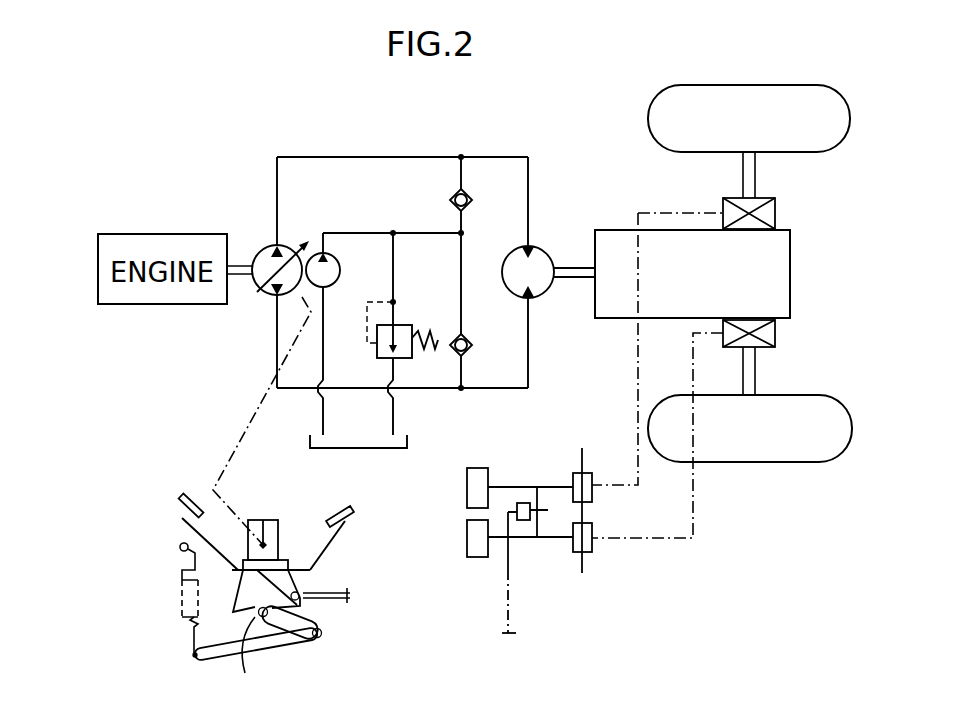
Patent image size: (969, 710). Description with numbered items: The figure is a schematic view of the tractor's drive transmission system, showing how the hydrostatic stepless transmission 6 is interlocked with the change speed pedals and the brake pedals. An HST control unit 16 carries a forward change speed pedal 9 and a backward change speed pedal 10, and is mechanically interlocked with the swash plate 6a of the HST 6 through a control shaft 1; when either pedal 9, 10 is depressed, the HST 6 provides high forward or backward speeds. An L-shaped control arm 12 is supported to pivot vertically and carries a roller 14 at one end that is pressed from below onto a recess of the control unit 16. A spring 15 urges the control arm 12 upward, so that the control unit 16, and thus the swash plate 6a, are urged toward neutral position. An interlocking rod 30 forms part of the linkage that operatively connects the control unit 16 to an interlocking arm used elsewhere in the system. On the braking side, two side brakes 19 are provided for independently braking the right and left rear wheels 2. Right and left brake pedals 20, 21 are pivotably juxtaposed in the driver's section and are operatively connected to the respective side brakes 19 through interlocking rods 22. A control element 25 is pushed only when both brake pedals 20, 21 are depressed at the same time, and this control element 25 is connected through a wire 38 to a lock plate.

The control shaft 1 is at (232, 455).
The rear wheels 2 is at (650, 105).
The hydrostatic transmission 6 is at (515, 135).
The swash plate 6a is at (256, 298).
The forward change speed pedal 9 is at (183, 500).
The backward change speed pedal 10 is at (332, 505).
The control arm 12 is at (293, 647).
The roller 14 is at (250, 663).
The spring 15 is at (187, 571).
The HST control unit 16 is at (290, 581).
The side brakes 19 is at (778, 205).
The right brake pedal 20 is at (467, 540).
The left brake pedal 21 is at (467, 490).
The interlocking rods 22 is at (663, 213).
The control element 25 is at (523, 503).
The interlocking rod 30 is at (337, 602).
The wire 38 is at (510, 602).